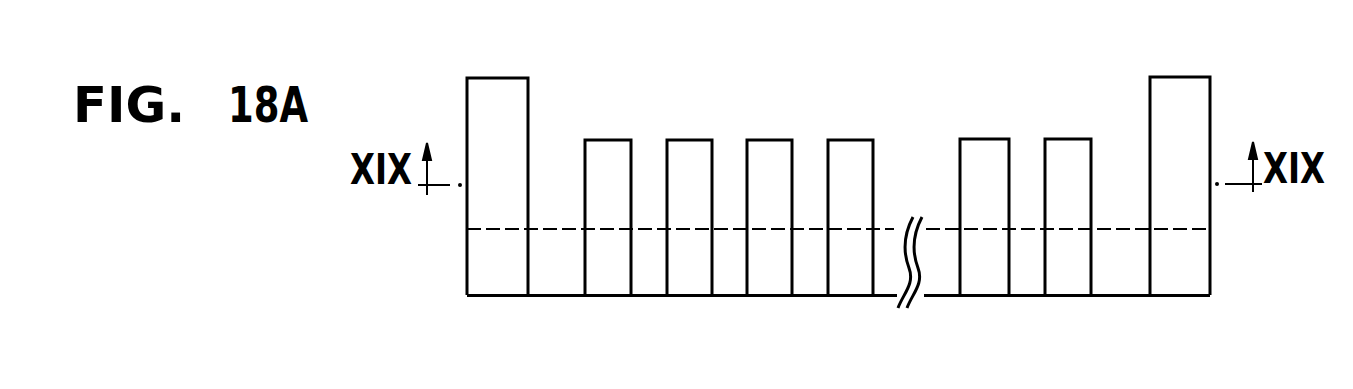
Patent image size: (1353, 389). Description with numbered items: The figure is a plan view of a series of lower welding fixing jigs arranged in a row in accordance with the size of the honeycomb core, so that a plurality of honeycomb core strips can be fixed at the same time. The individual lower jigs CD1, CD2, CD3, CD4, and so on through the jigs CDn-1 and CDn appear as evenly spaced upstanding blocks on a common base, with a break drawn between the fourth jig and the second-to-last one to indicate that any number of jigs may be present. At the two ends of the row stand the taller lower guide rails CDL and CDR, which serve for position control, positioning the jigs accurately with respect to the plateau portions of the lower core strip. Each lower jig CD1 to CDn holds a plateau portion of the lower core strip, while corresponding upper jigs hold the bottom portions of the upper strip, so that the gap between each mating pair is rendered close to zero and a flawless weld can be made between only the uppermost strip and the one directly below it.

The lower guide rail CDL is at (493, 86).
The lower welding fixing jig CD1 is at (610, 148).
The lower welding fixing jig CD2 is at (687, 147).
The lower welding fixing jig CD3 is at (767, 147).
The lower welding fixing jig CD4 is at (850, 147).
The lower welding fixing jig CDn-1 is at (985, 146).
The lower welding fixing jig CDn is at (1075, 146).
The lower guide rail CDR is at (1180, 86).